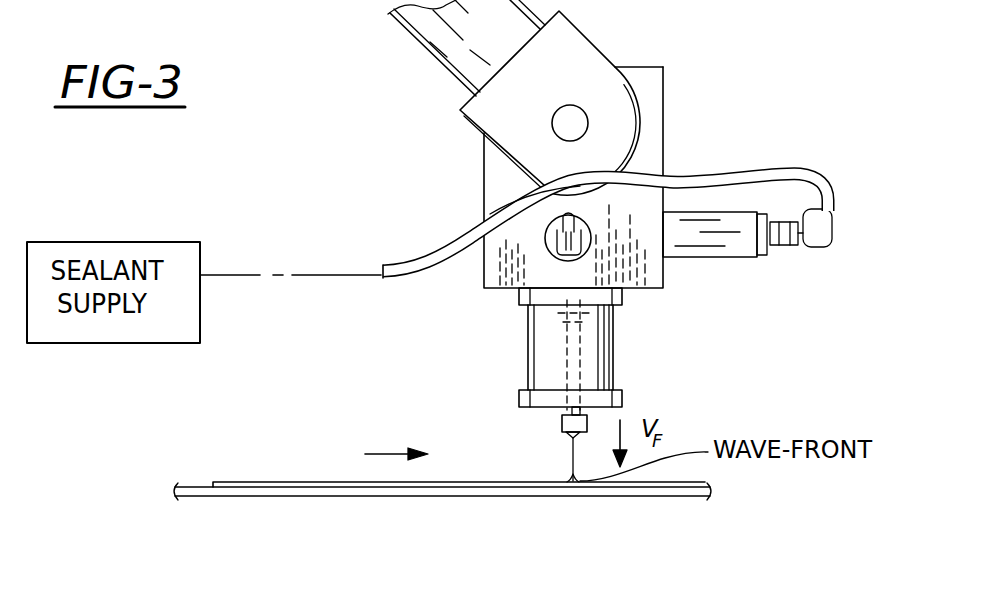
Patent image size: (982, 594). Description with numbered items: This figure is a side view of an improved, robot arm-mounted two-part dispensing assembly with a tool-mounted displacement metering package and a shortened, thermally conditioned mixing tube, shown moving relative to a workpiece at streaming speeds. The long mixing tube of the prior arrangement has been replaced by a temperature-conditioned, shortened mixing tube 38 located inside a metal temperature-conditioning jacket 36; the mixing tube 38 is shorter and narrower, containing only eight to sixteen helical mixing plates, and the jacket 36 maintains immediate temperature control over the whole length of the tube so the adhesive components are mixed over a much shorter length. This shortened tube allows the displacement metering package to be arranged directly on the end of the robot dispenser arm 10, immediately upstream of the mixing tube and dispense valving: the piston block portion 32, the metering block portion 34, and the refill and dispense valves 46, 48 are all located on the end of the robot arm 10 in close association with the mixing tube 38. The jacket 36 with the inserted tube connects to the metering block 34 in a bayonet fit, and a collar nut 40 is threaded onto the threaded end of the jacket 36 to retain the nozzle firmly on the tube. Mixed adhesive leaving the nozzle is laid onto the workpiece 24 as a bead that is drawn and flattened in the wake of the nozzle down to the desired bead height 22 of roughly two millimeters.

The robot dispenser arm 10 is at (457, 66).
The desired bead size or height 22 is at (253, 482).
The workpiece 24 is at (190, 487).
The piston block portion 32 is at (664, 76).
The metering block portion 34 is at (657, 266).
The temperature-conditioning jacket 36 is at (612, 357).
The shortened mixing tube 38 is at (567, 347).
The collar nut 40 is at (562, 425).
The refill valve 46 is at (740, 250).
The dispense valve 48 is at (552, 243).